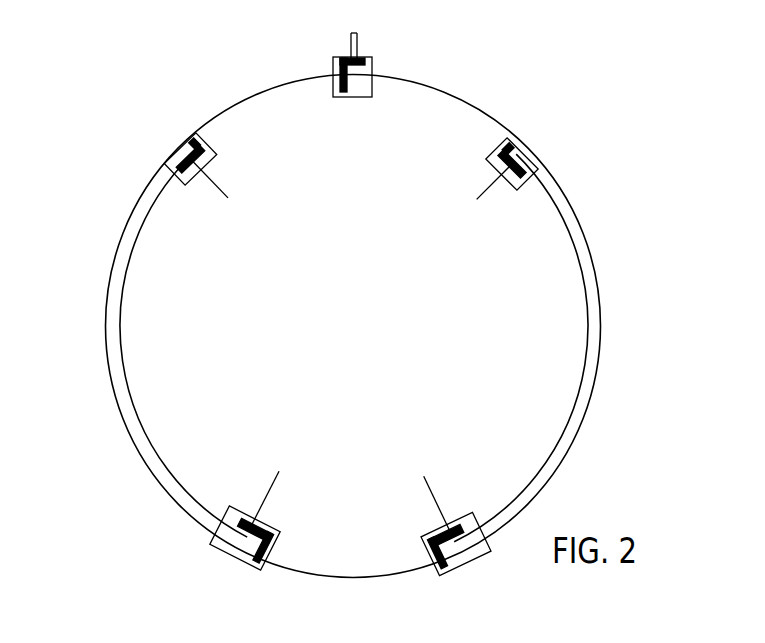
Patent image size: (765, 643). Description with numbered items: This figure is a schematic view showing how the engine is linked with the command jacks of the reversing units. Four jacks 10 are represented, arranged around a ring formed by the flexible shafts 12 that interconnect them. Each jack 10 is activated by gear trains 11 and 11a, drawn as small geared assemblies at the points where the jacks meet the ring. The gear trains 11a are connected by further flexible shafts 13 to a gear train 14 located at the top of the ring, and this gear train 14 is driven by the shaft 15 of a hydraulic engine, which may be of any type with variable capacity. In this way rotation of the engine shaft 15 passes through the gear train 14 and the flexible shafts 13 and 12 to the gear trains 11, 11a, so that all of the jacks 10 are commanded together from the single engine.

The jack 10 is at (228, 197).
The gear train 11 is at (211, 154).
The gear train 11a is at (276, 543).
The flexible shaft 12 is at (143, 428).
The flexible shaft 13 is at (105, 315).
The gear train 14 is at (335, 70).
The shaft 15 is at (358, 47).